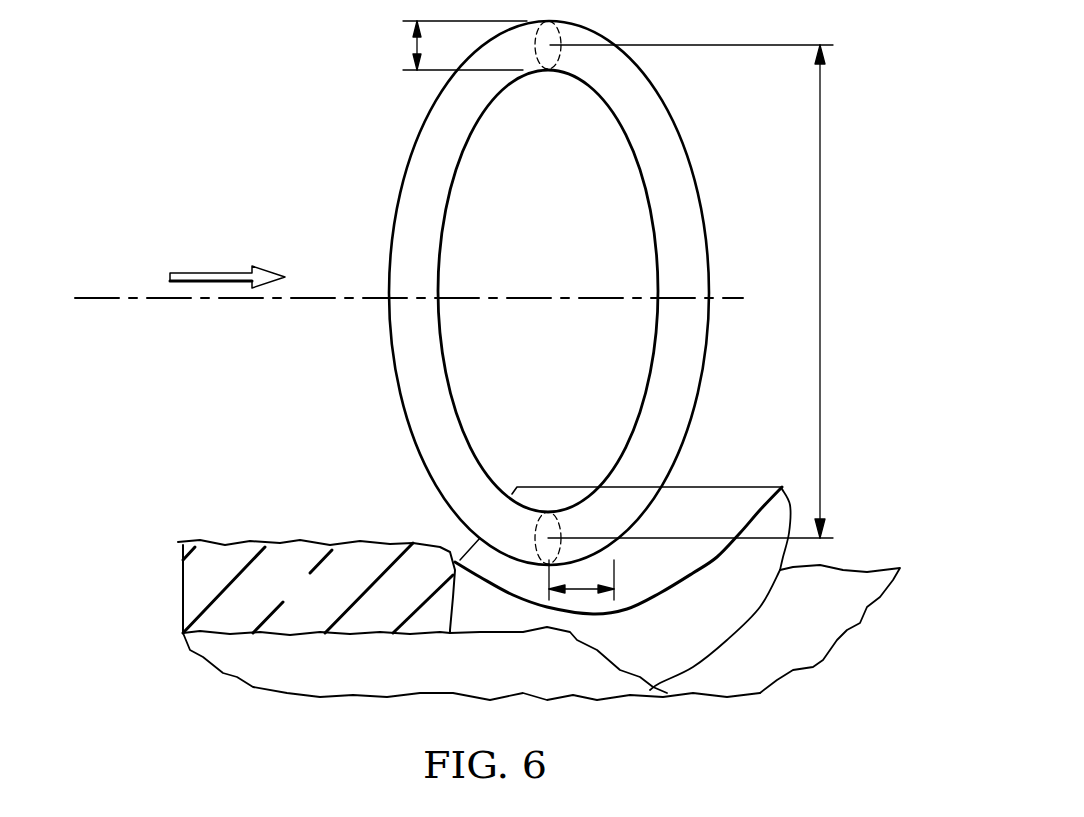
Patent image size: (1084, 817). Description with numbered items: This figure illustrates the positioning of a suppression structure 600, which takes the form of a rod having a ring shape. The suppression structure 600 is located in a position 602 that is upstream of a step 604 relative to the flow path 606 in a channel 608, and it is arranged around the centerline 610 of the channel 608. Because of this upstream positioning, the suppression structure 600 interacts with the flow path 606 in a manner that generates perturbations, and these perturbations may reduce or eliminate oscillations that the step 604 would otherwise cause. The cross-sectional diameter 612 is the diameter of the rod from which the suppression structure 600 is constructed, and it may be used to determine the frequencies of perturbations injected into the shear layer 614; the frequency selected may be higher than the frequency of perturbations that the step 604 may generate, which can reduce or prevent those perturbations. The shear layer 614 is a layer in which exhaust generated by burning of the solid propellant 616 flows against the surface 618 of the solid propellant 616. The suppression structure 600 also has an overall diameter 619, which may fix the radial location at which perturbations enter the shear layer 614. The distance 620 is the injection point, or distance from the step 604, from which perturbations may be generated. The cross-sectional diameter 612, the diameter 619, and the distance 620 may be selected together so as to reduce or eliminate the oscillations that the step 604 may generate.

The suppression structure 600 is at (400, 197).
The position 602 is at (537, 582).
The step 604 is at (860, 541).
The flow path 606 is at (210, 273).
The channel 608 is at (257, 173).
The centerline 610 is at (97, 297).
The cross-sectional diameter 612 is at (415, 43).
The shear layer 614 is at (482, 560).
The solid propellant 616 is at (337, 610).
The surface 618 is at (740, 500).
The diameter 619 is at (820, 280).
The distance 620 is at (580, 590).